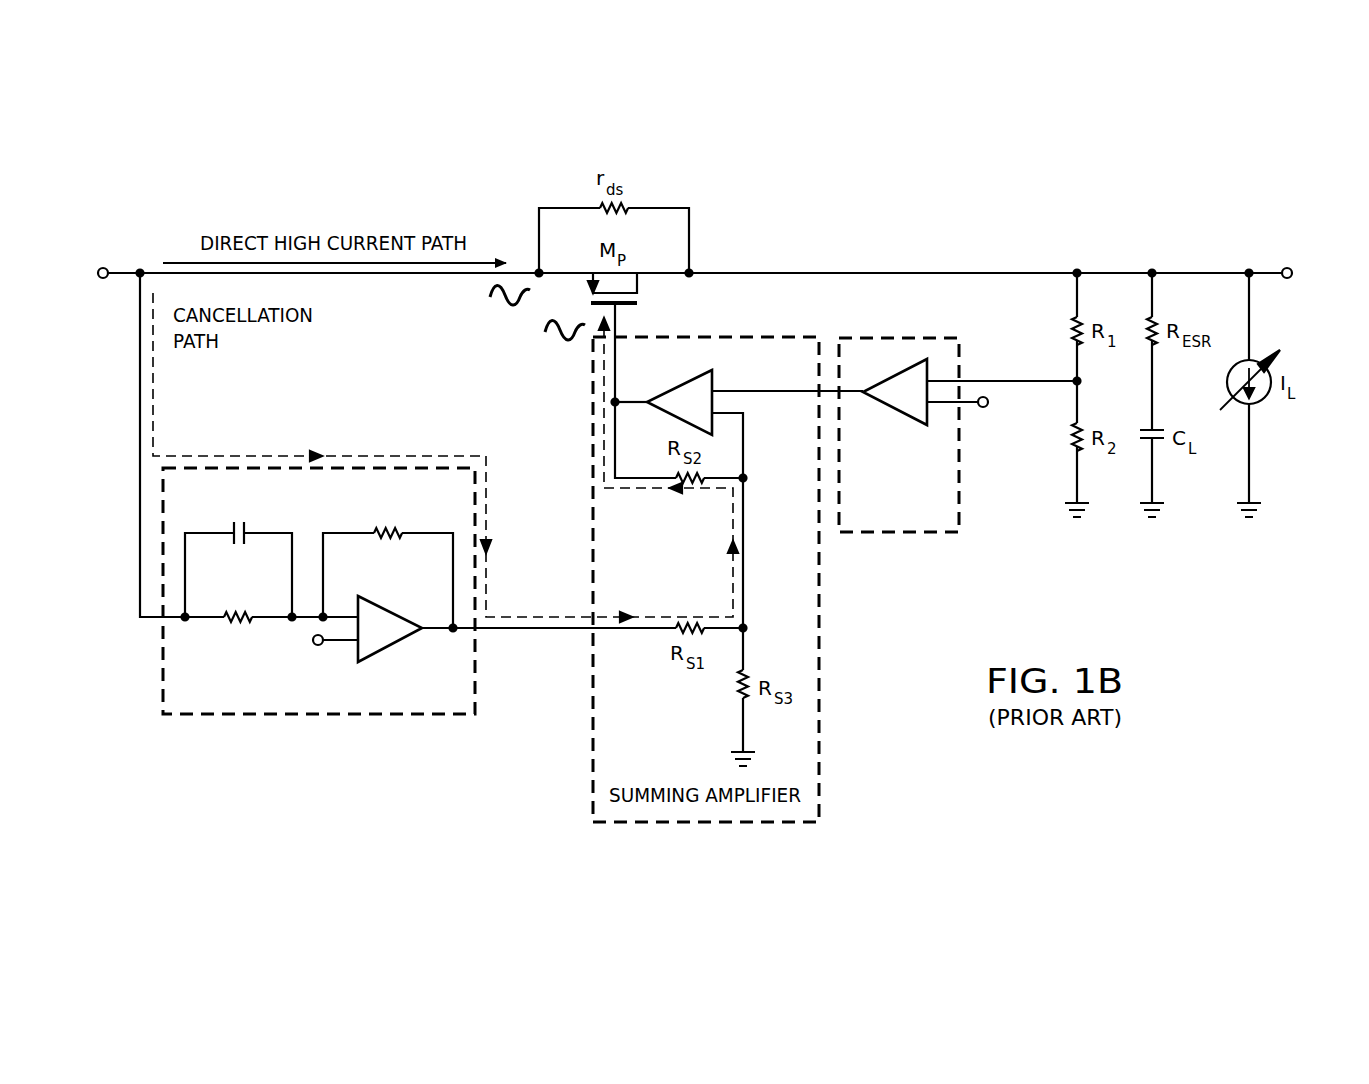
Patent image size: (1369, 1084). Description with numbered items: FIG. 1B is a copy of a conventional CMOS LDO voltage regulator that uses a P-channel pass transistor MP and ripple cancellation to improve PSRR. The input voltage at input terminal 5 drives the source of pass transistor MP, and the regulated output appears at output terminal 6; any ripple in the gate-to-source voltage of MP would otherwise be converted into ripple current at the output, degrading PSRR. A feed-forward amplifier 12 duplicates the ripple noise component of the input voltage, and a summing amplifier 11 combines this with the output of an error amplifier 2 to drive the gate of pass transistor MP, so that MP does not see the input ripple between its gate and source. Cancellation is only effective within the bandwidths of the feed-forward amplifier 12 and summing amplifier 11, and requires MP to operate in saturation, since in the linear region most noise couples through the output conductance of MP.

The input terminal 5 is at (125, 271).
The output terminal 6 is at (1264, 271).
The summing amplifier 11 is at (677, 385).
The error amplifier 2 is at (896, 410).
The feed-forward amplifier 12 is at (160, 653).